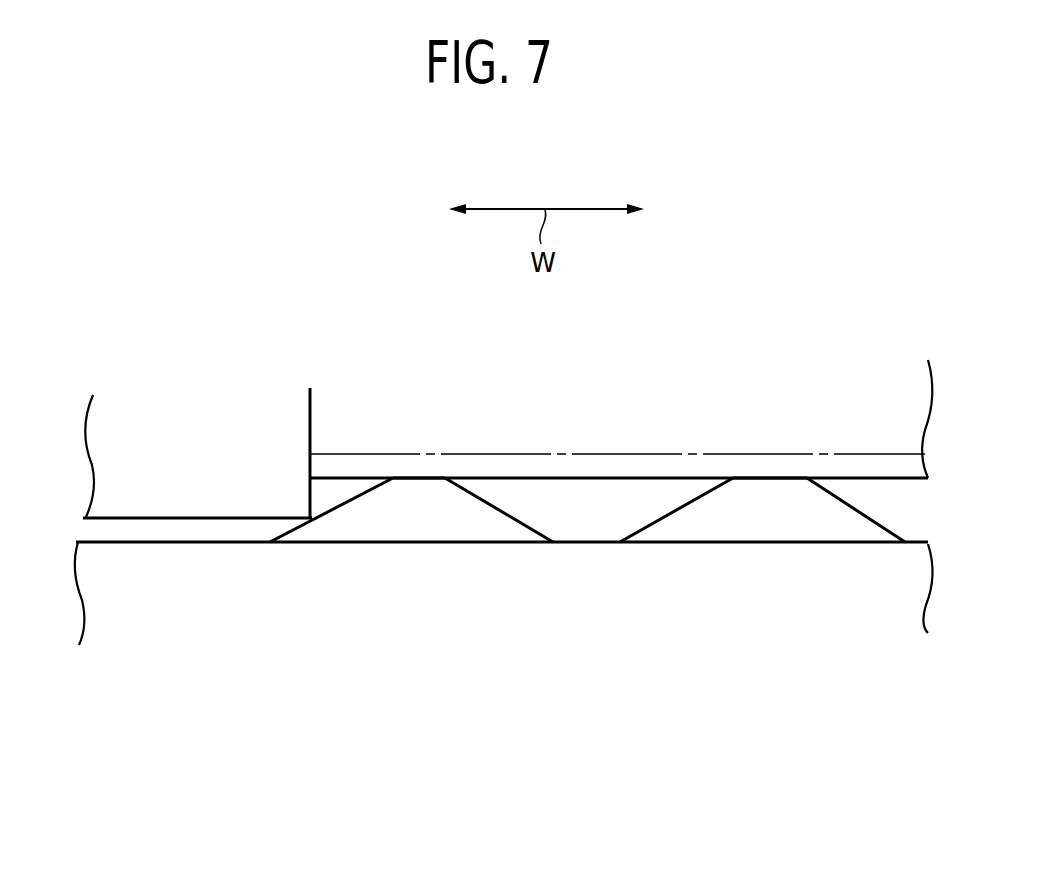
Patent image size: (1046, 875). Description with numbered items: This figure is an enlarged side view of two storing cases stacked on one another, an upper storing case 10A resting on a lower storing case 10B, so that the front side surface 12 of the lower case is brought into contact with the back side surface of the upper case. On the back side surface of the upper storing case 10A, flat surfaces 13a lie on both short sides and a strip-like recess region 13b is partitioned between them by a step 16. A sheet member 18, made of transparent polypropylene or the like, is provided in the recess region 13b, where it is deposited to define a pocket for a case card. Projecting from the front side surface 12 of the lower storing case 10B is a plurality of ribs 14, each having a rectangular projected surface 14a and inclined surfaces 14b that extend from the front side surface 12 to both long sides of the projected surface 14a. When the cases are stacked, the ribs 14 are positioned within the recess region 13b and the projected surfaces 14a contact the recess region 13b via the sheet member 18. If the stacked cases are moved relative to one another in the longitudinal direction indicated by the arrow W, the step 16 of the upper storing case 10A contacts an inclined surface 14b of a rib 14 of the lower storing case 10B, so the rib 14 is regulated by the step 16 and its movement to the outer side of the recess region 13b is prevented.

The upper storing case 10A is at (216, 366).
The lower storing case 10B is at (217, 640).
The front side surface 12 is at (150, 542).
The flat surfaces 13a is at (177, 518).
The recess region 13b is at (528, 454).
The rib 14 is at (587, 567).
The projected surface 14a is at (405, 478).
The inclined surfaces 14b is at (330, 508).
The step 16 is at (312, 486).
The sheet member 18 is at (633, 480).